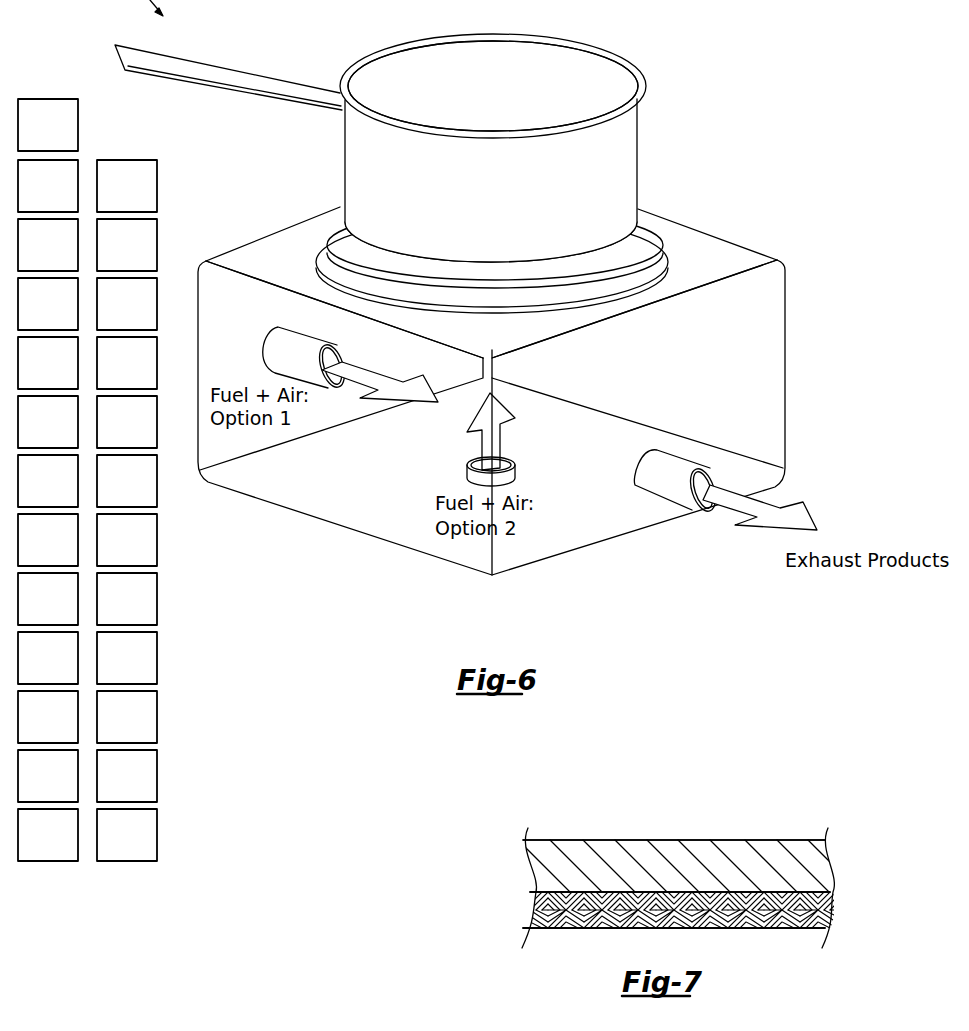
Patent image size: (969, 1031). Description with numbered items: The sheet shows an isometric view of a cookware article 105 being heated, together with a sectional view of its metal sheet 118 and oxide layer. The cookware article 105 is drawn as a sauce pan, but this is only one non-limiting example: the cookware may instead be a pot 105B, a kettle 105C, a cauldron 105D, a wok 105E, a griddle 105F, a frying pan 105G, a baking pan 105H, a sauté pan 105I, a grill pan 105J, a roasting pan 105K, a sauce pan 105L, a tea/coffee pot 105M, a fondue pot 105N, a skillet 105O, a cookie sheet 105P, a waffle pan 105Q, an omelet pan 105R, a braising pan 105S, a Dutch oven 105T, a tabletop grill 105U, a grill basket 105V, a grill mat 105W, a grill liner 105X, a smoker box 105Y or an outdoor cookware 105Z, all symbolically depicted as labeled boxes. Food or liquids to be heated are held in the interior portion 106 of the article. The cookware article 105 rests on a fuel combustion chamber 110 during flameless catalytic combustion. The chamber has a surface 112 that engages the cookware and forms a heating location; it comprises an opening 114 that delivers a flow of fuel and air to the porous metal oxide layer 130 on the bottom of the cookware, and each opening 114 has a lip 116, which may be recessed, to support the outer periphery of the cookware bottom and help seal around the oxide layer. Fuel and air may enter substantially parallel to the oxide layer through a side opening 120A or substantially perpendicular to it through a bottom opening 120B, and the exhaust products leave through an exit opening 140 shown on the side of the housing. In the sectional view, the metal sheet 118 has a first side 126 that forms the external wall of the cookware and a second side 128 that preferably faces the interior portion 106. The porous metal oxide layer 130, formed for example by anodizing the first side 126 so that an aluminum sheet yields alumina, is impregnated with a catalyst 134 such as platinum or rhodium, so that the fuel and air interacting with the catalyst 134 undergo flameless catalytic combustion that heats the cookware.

In FIG. 6, the cookware article 105 is at (575, 85).
In FIG. 6, the pot 105B is at (30, 133).
In FIG. 6, the kettle 105C is at (30, 194).
In FIG. 6, the cauldron 105D is at (30, 253).
In FIG. 6, the wok 105E is at (30, 312).
In FIG. 6, the griddle 105F is at (30, 371).
In FIG. 6, the frying pan 105G is at (30, 430).
In FIG. 6, the baking pan 105H is at (30, 489).
In FIG. 6, the sauté pan 105I is at (30, 548).
In FIG. 6, the grill pan 105J is at (30, 607).
In FIG. 6, the roasting pan 105K is at (30, 666).
In FIG. 6, the sauce pan 105L is at (30, 725).
In FIG. 6, the tea/coffee pot 105M is at (30, 784).
In FIG. 6, the fondue pot 105N is at (30, 843).
In FIG. 6, the skillet 105O is at (109, 194).
In FIG. 6, the cookie sheet 105P is at (109, 253).
In FIG. 6, the waffle pan 105Q is at (109, 312).
In FIG. 6, the omelet pan 105R is at (109, 371).
In FIG. 6, the braising pan 105S is at (109, 430).
In FIG. 6, the Dutch oven 105T is at (109, 489).
In FIG. 6, the tabletop grill 105U is at (109, 548).
In FIG. 6, the grill basket 105V is at (109, 607).
In FIG. 6, the grill mat 105W is at (109, 666).
In FIG. 6, the grill liner 105X is at (109, 725).
In FIG. 6, the smoker box 105Y is at (109, 784).
In FIG. 6, the outdoor cookware 105Z is at (109, 843).
In FIG. 6, the interior portion 106 is at (493, 95).
In FIG. 6, the fuel combustion chamber 110 is at (783, 365).
In FIG. 6, the surface 112 is at (745, 260).
In FIG. 6, the opening 114 is at (517, 275).
In FIG. 6, the lip 116 is at (627, 248).
In FIG. 6, the metal sheet 118 is at (433, 265).
In FIG. 7, the metal sheet 118 is at (678, 860).
In FIG. 6, the side opening 120A is at (325, 364).
In FIG. 6, the bottom opening 120B is at (514, 439).
In FIG. 6, the exit opening 140 is at (731, 490).
In FIG. 7, the first side 126 is at (612, 907).
In FIG. 7, the second side 128 is at (600, 840).
In FIG. 7, the porous metal oxide layer 130 is at (720, 927).
In FIG. 7, the catalyst 134 is at (755, 953).